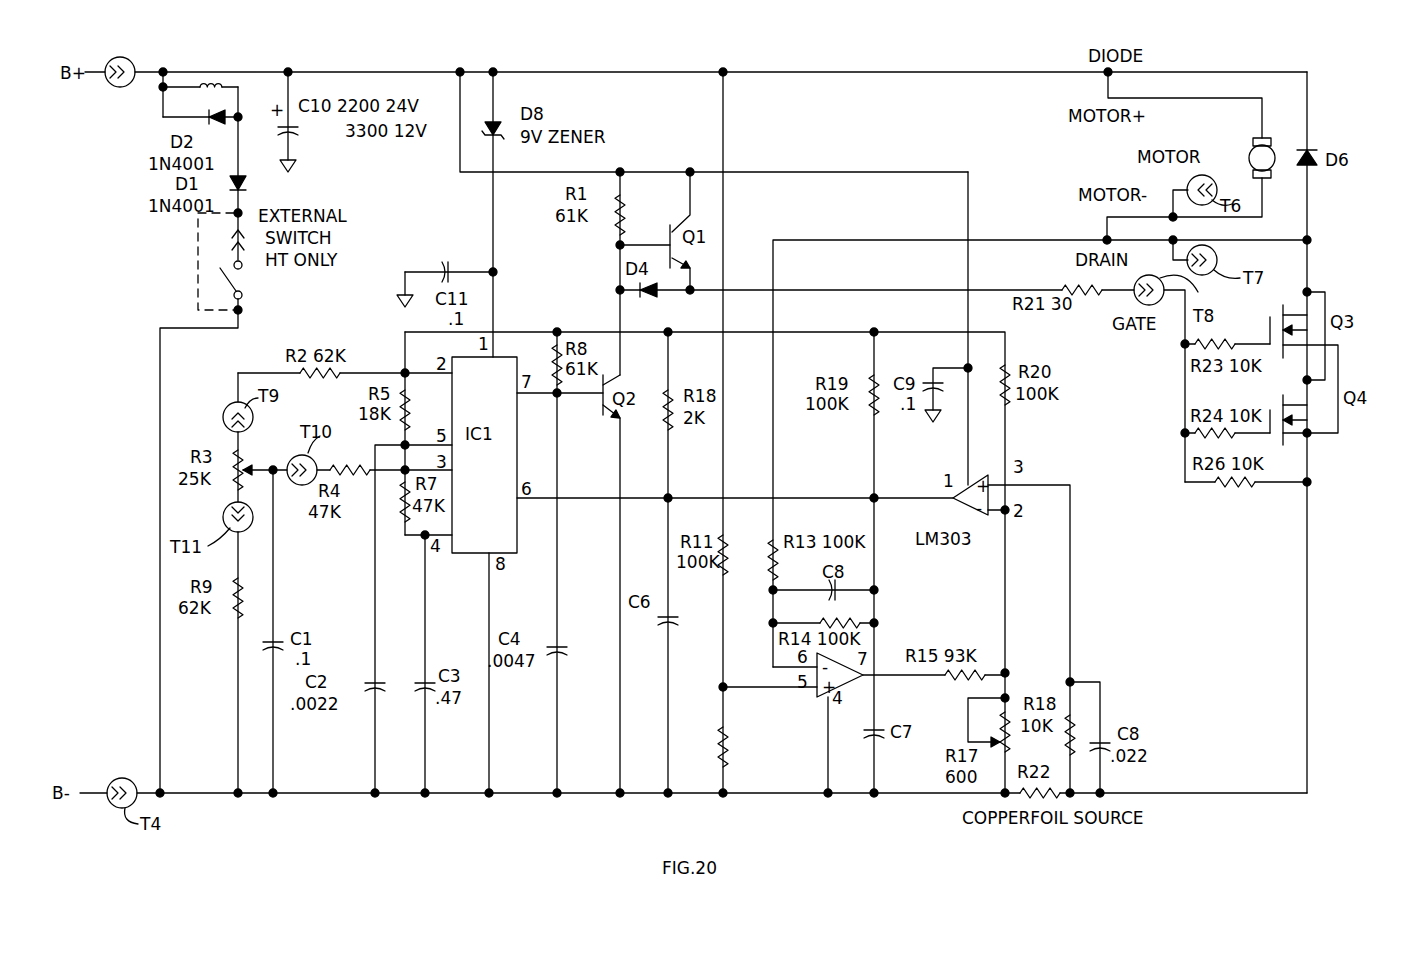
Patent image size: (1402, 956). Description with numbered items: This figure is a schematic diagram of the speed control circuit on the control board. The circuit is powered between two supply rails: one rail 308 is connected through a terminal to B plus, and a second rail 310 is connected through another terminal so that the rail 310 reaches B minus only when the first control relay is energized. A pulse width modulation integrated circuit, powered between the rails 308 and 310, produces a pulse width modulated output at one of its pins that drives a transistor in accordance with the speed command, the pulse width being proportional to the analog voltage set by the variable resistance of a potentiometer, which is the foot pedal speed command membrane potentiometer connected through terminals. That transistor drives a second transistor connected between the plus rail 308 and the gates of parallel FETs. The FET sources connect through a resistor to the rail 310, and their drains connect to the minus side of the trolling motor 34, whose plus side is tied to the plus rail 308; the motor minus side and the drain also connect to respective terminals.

The rail 308 is at (200, 72).
The second rail 310 is at (207, 795).
The trolling motor 34 is at (1242, 148).